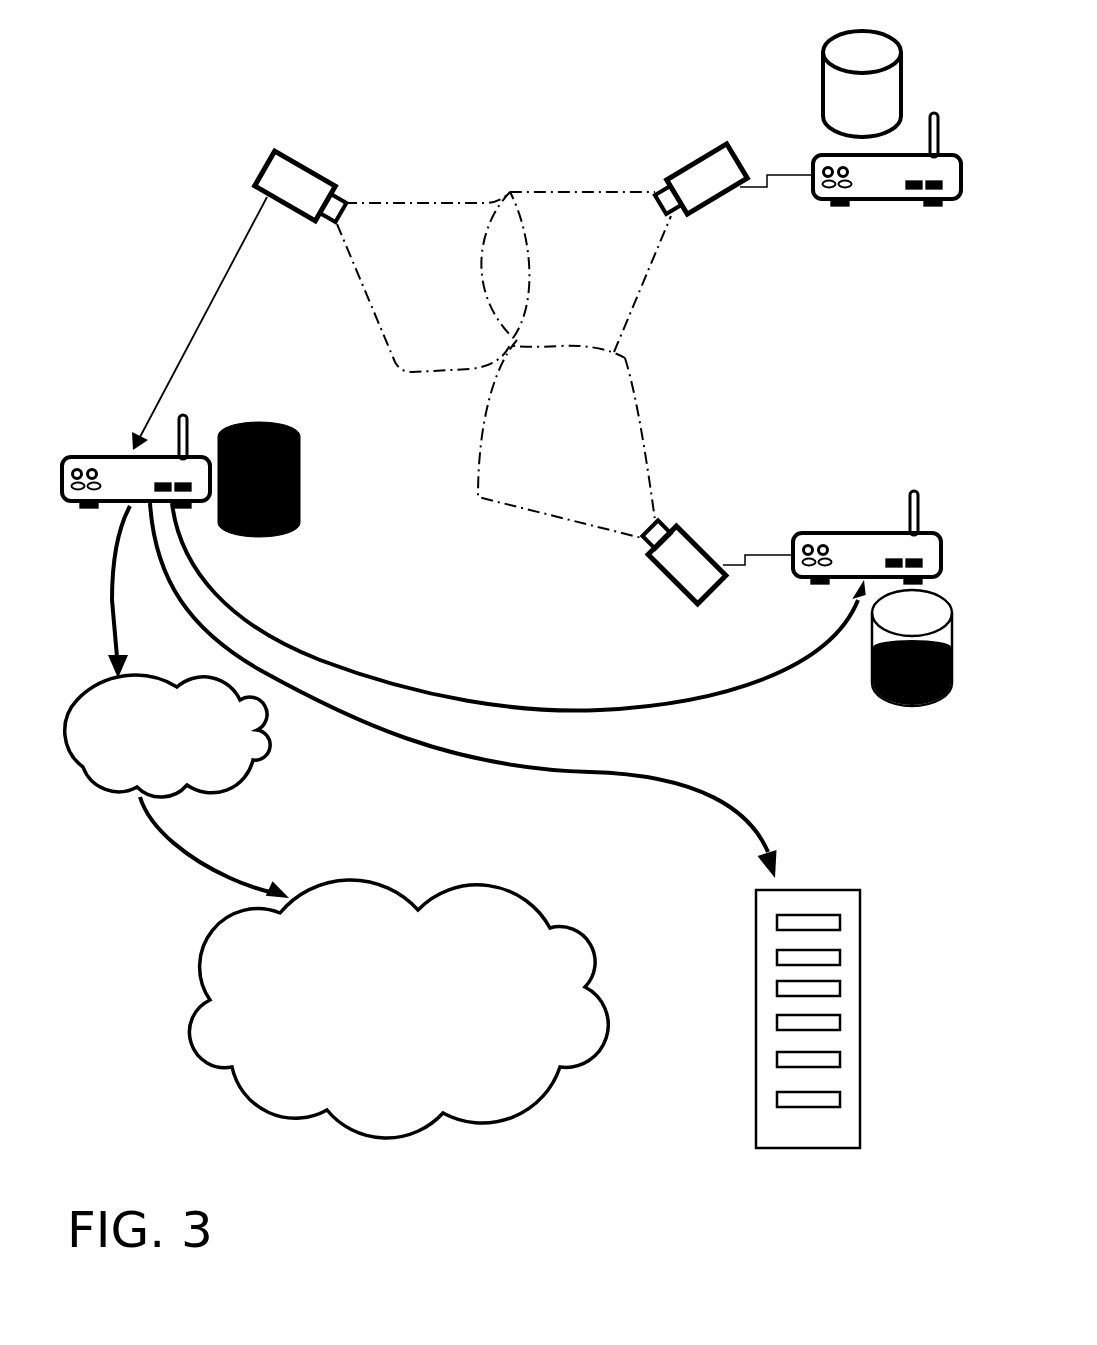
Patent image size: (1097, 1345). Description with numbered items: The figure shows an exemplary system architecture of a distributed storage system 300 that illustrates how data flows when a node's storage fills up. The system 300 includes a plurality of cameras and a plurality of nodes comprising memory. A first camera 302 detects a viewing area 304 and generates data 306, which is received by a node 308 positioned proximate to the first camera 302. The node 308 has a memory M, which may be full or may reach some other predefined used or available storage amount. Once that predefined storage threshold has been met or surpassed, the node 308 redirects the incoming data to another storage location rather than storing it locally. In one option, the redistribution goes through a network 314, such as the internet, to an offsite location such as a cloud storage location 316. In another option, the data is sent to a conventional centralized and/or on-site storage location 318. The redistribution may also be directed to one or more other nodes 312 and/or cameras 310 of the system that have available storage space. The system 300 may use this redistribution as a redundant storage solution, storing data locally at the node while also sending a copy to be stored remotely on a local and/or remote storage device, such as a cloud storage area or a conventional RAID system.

The system 300 is at (345, 80).
The first camera 302 is at (258, 157).
The viewing area 304 is at (420, 242).
The data 306 is at (157, 300).
The node 308 is at (100, 452).
The memory M is at (305, 473).
The camera 310 is at (698, 540).
The node 312 is at (823, 518).
The network 314 is at (93, 690).
The cloud storage location 316 is at (480, 878).
The on-site storage location 318 is at (847, 880).